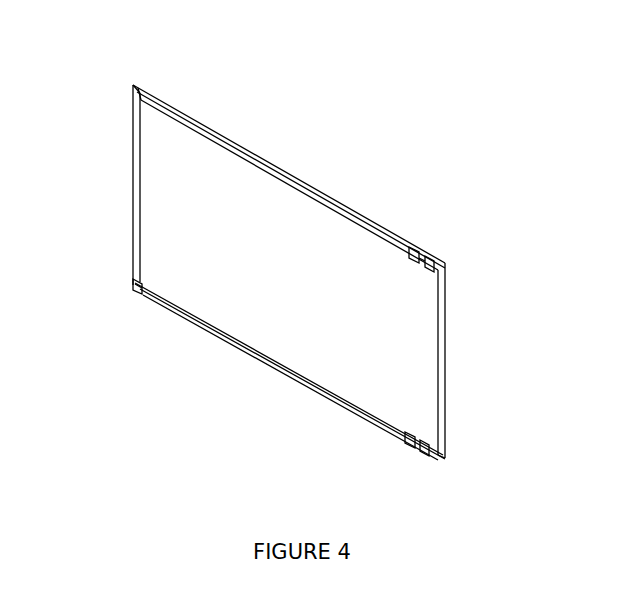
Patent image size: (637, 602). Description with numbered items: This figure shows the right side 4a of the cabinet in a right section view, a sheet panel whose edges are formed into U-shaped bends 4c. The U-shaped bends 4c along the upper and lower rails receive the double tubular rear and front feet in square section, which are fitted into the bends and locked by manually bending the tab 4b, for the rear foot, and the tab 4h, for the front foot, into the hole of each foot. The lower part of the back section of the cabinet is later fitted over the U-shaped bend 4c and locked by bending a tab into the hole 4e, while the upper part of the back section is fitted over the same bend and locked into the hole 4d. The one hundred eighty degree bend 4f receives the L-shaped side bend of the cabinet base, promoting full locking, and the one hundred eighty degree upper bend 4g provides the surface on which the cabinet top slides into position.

The right side 4a is at (298, 271).
The tab 4b is at (409, 447).
The U-shaped bend 4c is at (289, 266).
The hole 4d is at (143, 294).
The hole 4e is at (289, 370).
The 180° bend 4f is at (446, 362).
The 180° upper bend 4g is at (133, 205).
The tab 4h is at (409, 248).